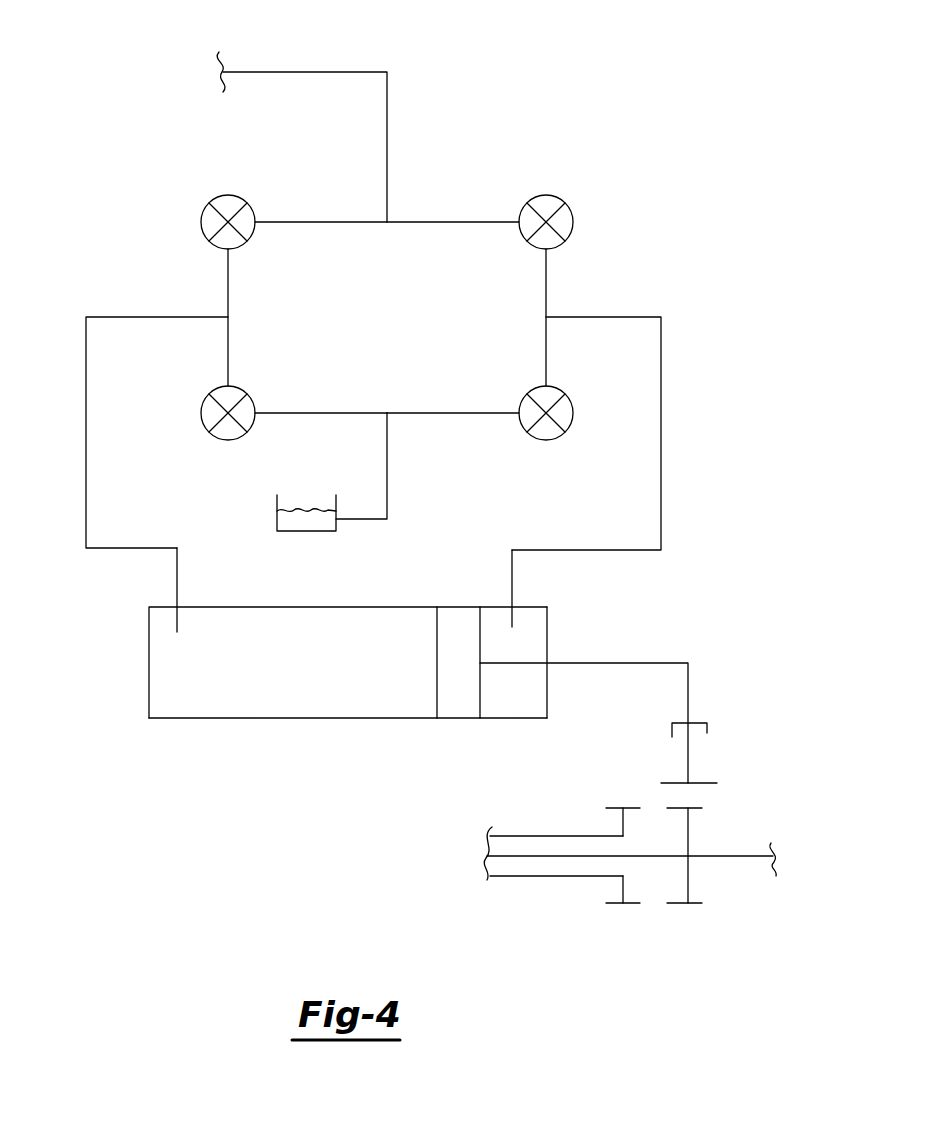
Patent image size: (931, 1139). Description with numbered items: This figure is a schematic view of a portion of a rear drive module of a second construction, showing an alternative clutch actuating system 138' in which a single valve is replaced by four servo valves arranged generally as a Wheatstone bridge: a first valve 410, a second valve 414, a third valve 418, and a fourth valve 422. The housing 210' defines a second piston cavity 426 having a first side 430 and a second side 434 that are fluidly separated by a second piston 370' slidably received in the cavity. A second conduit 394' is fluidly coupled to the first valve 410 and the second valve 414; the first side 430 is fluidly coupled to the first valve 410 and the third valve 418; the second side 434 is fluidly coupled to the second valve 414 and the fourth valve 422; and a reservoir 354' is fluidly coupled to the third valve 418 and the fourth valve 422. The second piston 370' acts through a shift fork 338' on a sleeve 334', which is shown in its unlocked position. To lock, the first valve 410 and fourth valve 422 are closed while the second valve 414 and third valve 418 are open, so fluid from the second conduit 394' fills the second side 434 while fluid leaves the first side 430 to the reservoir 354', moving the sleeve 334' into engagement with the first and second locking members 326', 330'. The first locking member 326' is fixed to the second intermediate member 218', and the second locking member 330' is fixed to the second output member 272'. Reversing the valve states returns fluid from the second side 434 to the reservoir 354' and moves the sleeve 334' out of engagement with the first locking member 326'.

The second conduit 394' is at (319, 121).
The clutch actuating system 138' is at (476, 152).
The first valve 410 is at (201, 222).
The second valve 414 is at (573, 222).
The third valve 418 is at (252, 400).
The fourth valve 422 is at (520, 401).
The reservoir 354' is at (282, 472).
The housing 210' is at (297, 660).
The first side 430 is at (173, 702).
The second piston cavity 426 is at (282, 702).
The second piston 370' is at (442, 706).
The second side 434 is at (517, 713).
The shift fork 338' is at (736, 720).
The sleeve 334' is at (629, 723).
The second output member 272' is at (649, 837).
The second intermediate member 218' is at (539, 878).
The first locking member 326' is at (598, 886).
The second locking member 330' is at (725, 879).